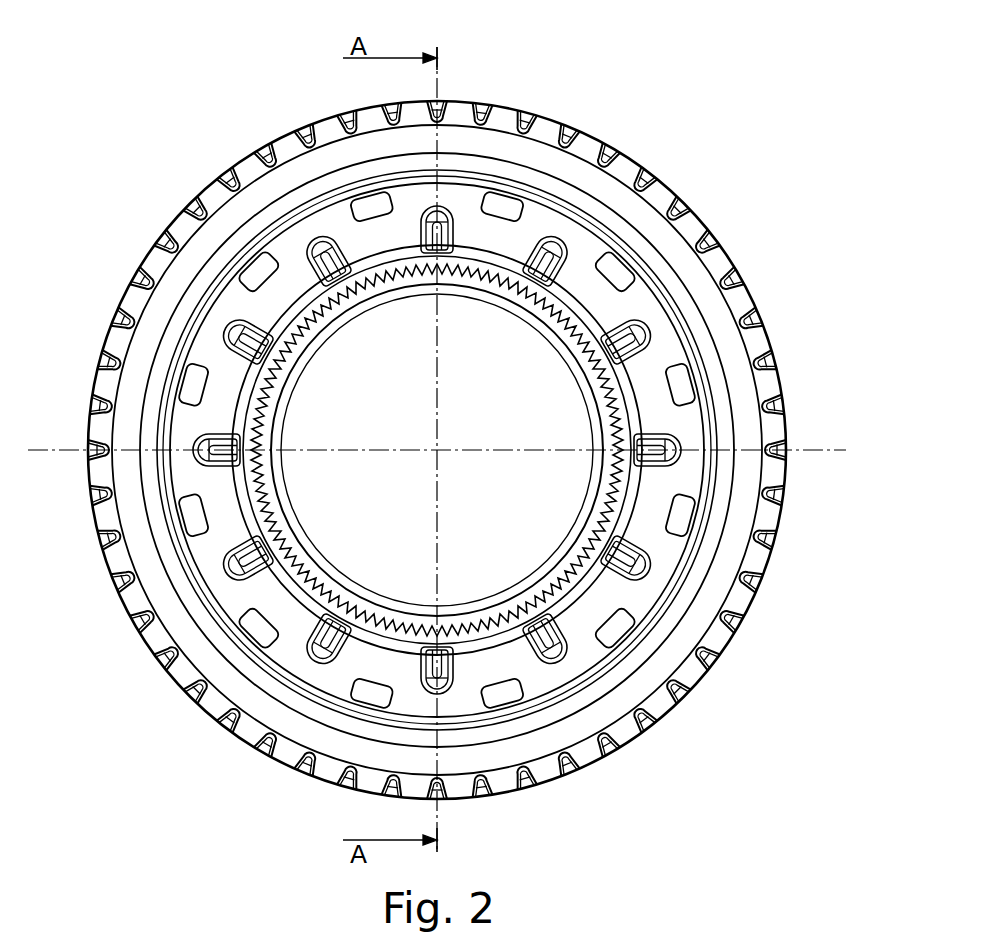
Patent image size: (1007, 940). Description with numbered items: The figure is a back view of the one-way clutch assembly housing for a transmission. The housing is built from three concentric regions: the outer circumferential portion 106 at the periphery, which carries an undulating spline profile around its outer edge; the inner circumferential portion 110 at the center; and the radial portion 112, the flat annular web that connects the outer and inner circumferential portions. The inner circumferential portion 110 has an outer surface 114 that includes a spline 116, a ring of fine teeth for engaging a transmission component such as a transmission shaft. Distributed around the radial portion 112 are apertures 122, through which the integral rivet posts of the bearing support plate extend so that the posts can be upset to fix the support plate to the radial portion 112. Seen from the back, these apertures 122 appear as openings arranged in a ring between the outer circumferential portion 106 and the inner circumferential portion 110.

The outer circumferential portion 106 is at (483, 95).
The inner circumferential portion 110 is at (613, 387).
The radial portion 112 is at (528, 217).
The outer surface 114 is at (580, 302).
The spline 116 is at (567, 320).
The apertures 122 is at (693, 387).